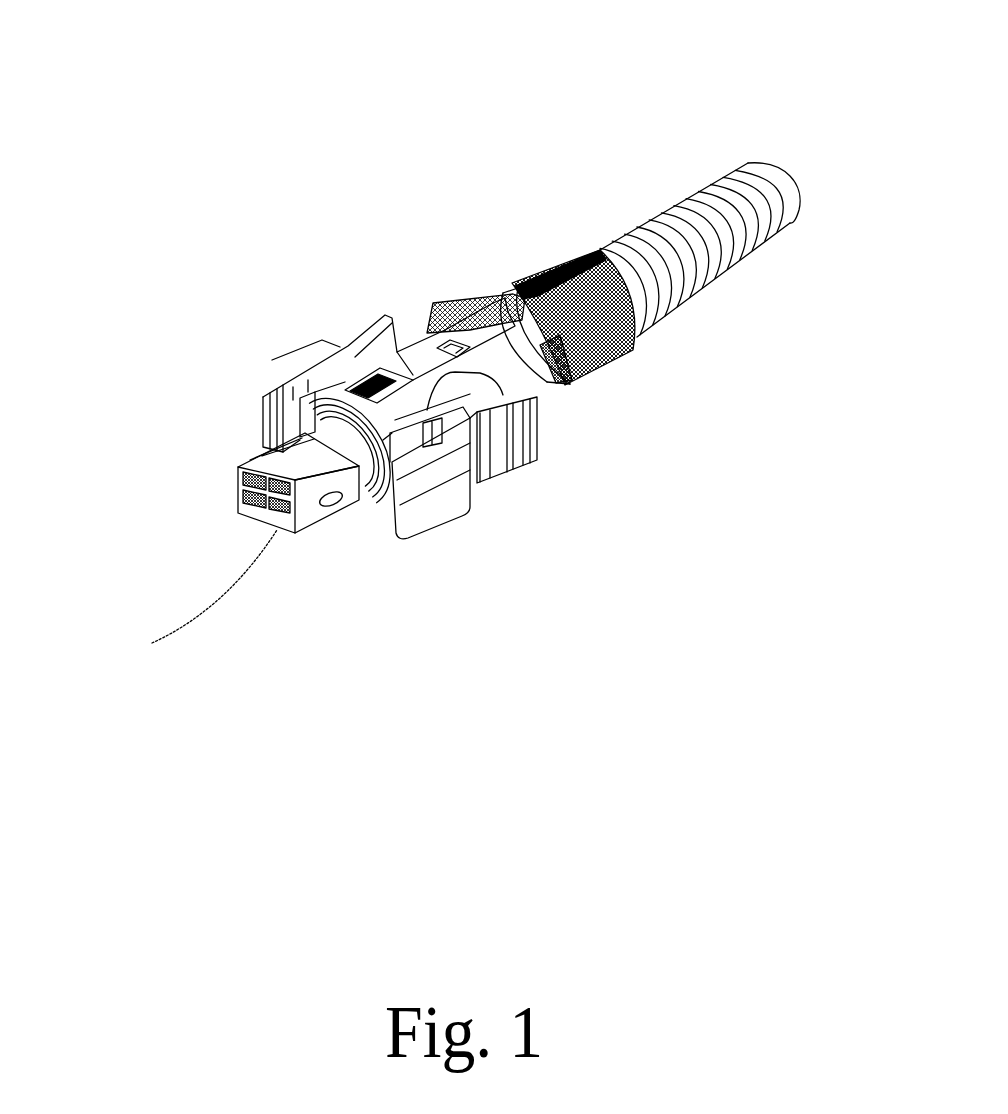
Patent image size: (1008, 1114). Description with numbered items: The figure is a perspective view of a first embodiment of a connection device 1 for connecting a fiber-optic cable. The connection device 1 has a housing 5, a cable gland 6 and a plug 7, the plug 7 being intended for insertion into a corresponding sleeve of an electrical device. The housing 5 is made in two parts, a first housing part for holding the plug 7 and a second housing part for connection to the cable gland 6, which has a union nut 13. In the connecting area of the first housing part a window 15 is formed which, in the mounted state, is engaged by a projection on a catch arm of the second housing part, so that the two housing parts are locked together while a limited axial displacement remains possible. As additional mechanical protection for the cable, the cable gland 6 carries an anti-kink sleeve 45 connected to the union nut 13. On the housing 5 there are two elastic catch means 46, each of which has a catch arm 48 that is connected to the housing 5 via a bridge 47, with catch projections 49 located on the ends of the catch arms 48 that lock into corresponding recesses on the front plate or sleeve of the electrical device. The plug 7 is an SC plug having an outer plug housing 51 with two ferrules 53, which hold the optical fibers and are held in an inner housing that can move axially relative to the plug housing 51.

The connection device 1 is at (362, 195).
The housing 5 is at (418, 300).
The cable gland 6 is at (683, 345).
The plug 7 is at (214, 479).
The union nut 13 is at (562, 238).
The window 15 is at (448, 338).
The anti-kink sleeve 45 is at (750, 267).
The elastic catch means 46 is at (240, 385).
The bridge 47 is at (273, 340).
The catch arm 48 is at (338, 343).
The catch projection 49 is at (275, 421).
The outer plug housing 51 is at (309, 520).
The ferrule 53 is at (247, 500).